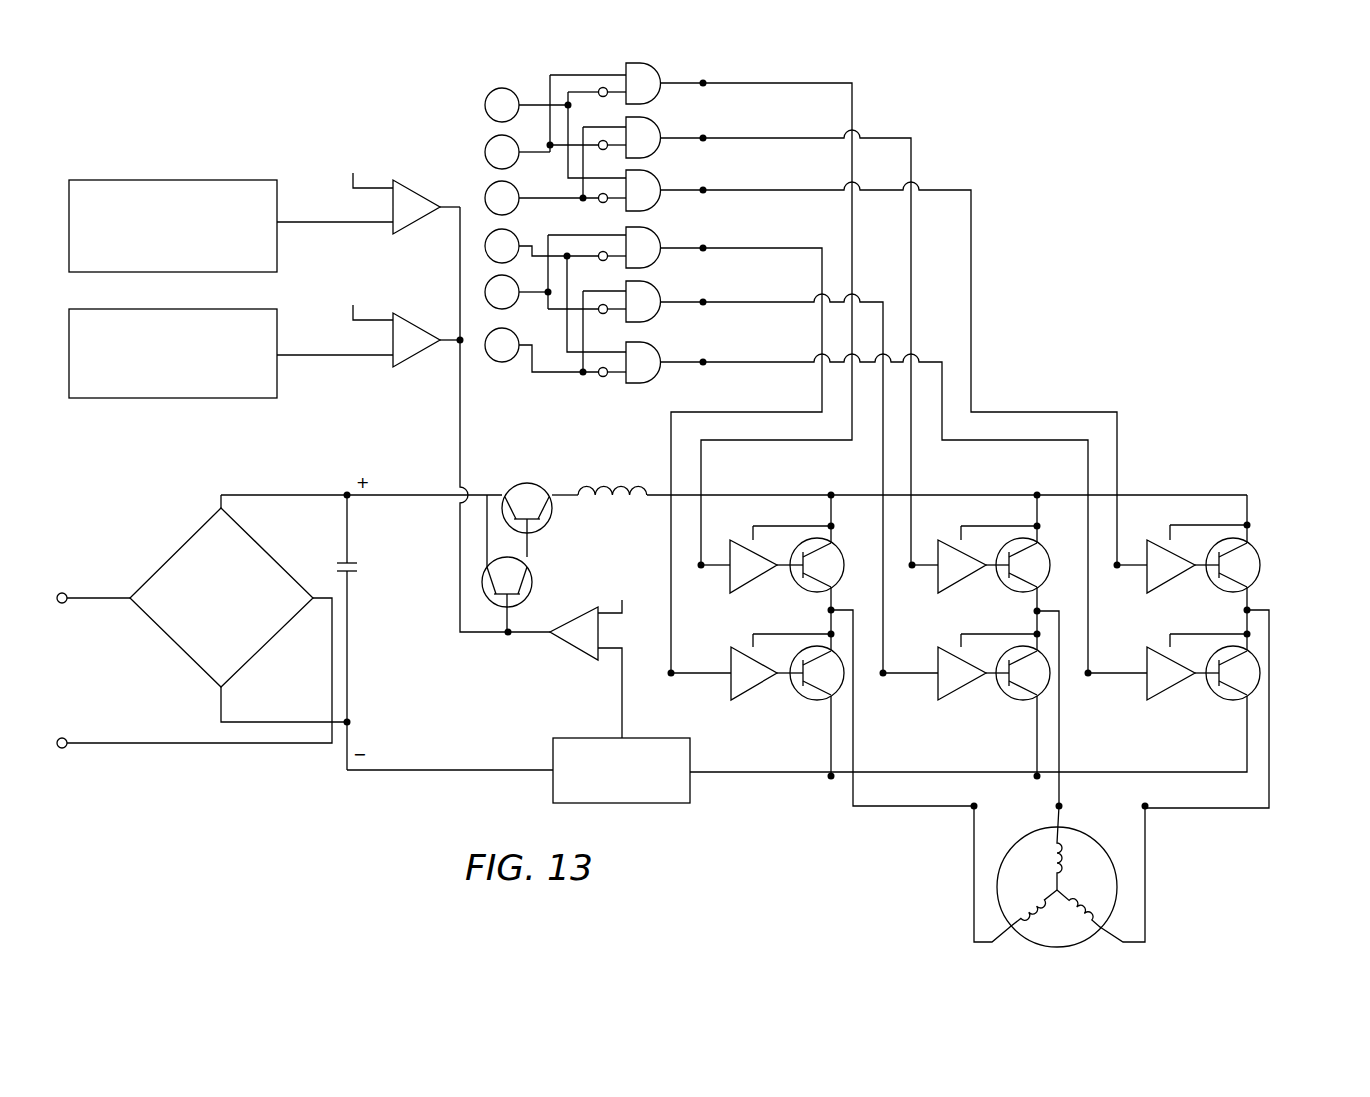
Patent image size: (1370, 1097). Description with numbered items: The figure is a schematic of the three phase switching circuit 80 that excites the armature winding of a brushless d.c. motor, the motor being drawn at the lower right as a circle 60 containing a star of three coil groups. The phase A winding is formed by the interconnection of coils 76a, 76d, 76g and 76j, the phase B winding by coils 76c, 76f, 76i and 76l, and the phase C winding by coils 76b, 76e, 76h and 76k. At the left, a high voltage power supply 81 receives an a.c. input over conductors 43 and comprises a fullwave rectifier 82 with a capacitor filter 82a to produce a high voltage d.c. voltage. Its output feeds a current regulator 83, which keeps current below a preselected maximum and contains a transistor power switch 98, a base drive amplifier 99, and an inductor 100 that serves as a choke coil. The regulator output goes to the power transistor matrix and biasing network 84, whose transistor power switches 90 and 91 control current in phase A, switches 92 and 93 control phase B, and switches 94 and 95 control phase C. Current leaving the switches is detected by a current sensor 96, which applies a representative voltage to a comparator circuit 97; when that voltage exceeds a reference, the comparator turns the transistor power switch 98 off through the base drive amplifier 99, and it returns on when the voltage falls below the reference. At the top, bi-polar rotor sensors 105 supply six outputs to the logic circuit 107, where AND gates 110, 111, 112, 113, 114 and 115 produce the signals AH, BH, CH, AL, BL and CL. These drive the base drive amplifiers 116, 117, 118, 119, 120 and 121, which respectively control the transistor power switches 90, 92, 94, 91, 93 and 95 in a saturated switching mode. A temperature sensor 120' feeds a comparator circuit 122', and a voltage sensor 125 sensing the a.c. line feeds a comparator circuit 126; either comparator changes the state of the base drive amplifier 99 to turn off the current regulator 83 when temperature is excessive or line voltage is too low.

The three phase switching circuit 80 is at (92, 163).
The voltage sensor 125 is at (225, 180).
The temperature sensor 120' is at (178, 339).
The base drive amplifier 121 is at (398, 160).
The comparator circuit 126 is at (405, 186).
The comparator circuit 122' is at (370, 310).
The rotor sensors 105 is at (478, 106).
The logic circuit 107 is at (826, 66).
The AND gate 110 is at (644, 64).
The AND gate 111 is at (644, 118).
The AND gate 112 is at (644, 171).
The AND gate 113 is at (644, 228).
The AND gate 114 is at (644, 282).
The AND gate 115 is at (644, 343).
The high voltage power supply 81 is at (157, 523).
The fullwave rectifier 82 is at (255, 546).
The capacitor filter 82a is at (355, 562).
The conductor 43 is at (97, 597).
The current regulator 83 is at (543, 476).
The transistor power switch 98 is at (553, 527).
The base drive amplifier 99 is at (532, 574).
The comparator circuit 97 is at (576, 650).
The inductor 100 is at (607, 483).
The current sensor 96 is at (671, 738).
The power transistor matrix and biasing network 84 is at (787, 790).
The base drive amplifier 116 is at (742, 538).
The base drive amplifier 117 is at (950, 538).
The base drive amplifier 118 is at (1160, 538).
The base amplifier 119 is at (732, 652).
The base drive amplifier 120 is at (953, 664).
The transistor power switch 90 is at (839, 552).
The transistor power switch 91 is at (801, 700).
The transistor power switch 92 is at (1034, 553).
The transistor power switch 93 is at (1014, 700).
The transistor power switch 94 is at (1257, 553).
The transistor power switch 95 is at (1214, 700).
The motor 60 is at (928, 930).
The coil 76a is at (901, 910).
The coil 76d is at (901, 910).
The coil 76g is at (901, 910).
The coil 76j is at (1038, 912).
The coil 76b is at (1201, 905).
The coil 76e is at (1201, 905).
The coil 76h is at (1201, 905).
The coil 76k is at (1080, 912).
The coil 76c is at (1194, 848).
The coil 76f is at (1194, 848).
The coil 76i is at (1194, 848).
The coil 76l is at (1053, 858).